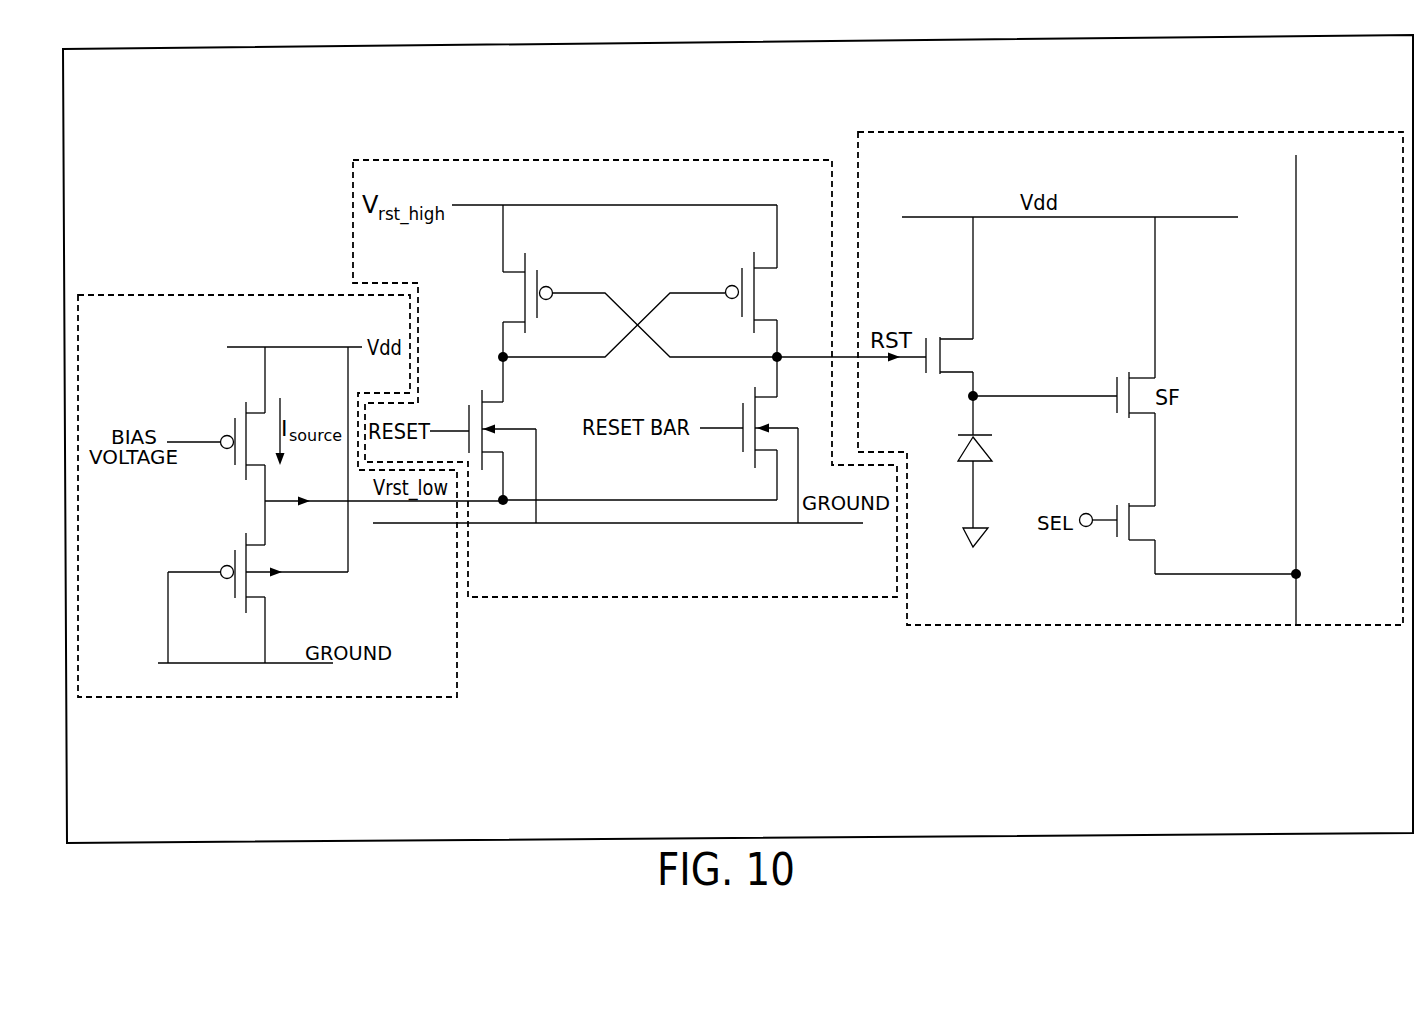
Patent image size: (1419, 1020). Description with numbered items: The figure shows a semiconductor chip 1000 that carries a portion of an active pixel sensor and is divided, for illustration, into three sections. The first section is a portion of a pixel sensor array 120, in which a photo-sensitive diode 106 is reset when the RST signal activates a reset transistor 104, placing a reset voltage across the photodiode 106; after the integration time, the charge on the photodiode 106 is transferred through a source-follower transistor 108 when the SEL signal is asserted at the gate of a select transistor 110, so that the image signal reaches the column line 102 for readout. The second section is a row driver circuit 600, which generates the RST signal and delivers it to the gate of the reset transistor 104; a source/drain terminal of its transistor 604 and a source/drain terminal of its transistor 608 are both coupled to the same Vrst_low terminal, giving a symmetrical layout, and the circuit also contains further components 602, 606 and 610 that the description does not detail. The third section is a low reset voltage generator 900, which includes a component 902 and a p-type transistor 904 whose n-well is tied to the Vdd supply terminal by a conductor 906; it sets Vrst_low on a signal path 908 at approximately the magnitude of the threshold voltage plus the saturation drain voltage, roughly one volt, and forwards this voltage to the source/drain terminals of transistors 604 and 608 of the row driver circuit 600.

The semiconductor chip 1000 is at (1167, 835).
The low reset voltage generator 900 is at (429, 700).
The bias transistor 902 is at (240, 400).
The p-type transistor 904 is at (280, 585).
The conductor 906 is at (349, 556).
The signal path 908 is at (280, 503).
The row driver circuit 600 is at (690, 600).
The first PMOS latch transistor 602 is at (540, 260).
The transistor 604 is at (520, 410).
The second PMOS latch transistor 606 is at (770, 293).
The transistor 608 is at (730, 445).
The Vrst_low node 610 is at (548, 497).
The pixel sensor array 120 is at (990, 628).
The column line 102 is at (1295, 245).
The reset transistor 104 is at (970, 358).
The photo-sensitive diode 106 is at (948, 452).
The source-follower transistor 108 is at (1122, 422).
The select transistor 110 is at (1124, 556).